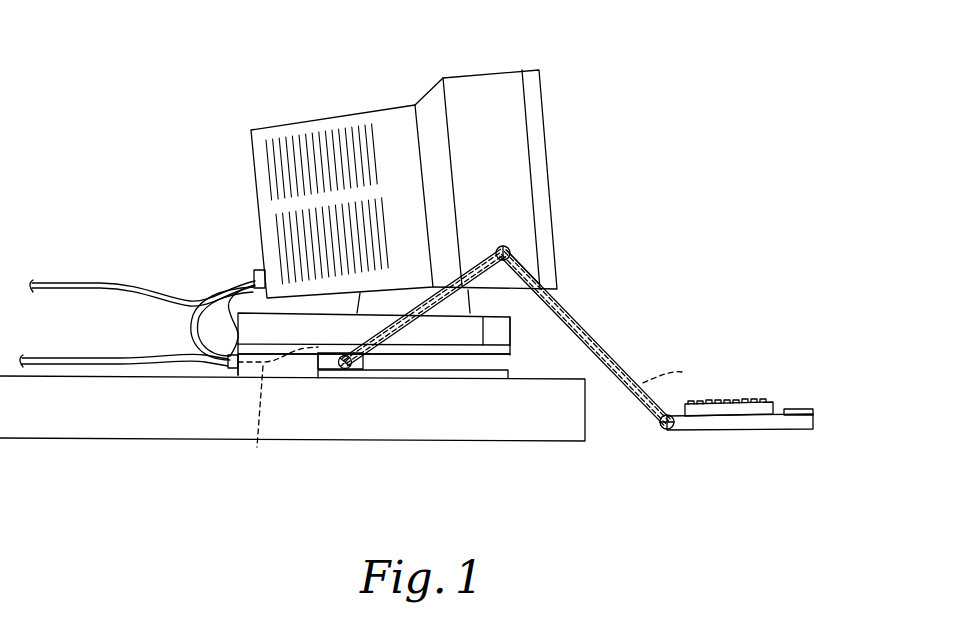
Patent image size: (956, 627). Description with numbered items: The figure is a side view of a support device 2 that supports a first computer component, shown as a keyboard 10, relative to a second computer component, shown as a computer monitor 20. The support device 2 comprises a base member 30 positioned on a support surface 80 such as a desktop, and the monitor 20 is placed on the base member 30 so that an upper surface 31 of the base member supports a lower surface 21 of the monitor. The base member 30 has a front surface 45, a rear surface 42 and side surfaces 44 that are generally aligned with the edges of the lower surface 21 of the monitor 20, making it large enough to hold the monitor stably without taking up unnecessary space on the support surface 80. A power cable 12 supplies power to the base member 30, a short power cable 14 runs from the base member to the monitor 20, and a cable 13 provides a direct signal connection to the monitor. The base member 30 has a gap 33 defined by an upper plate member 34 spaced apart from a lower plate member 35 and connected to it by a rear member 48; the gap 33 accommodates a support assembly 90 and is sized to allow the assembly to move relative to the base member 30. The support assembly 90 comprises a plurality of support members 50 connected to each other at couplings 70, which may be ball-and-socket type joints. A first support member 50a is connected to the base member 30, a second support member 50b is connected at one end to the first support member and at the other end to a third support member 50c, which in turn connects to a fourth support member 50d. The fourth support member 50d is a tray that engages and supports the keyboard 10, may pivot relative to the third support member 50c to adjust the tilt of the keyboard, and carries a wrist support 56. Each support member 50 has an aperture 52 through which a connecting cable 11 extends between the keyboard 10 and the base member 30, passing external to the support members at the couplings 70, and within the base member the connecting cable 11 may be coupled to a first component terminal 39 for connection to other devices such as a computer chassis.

The support device 2 is at (616, 153).
The keyboard 10 is at (773, 404).
The connecting cable 11 is at (481, 415).
The power cable 12 is at (60, 360).
The cable 13 is at (66, 283).
The short power cable 14 is at (203, 292).
The computer monitor 20 is at (464, 77).
The lower surface of the monitor 21 is at (229, 361).
The base member 30 is at (311, 380).
The upper surface of the base member 31 is at (512, 334).
The gap 33 is at (508, 365).
The upper plate member 34 is at (480, 312).
The lower plate member 35 is at (433, 378).
The first component terminal 39 is at (243, 368).
The rear surface of the base member 42 is at (230, 288).
The side surfaces of the base member 44 is at (312, 372).
The front surface of the base member 45 is at (512, 352).
The rear member 48 is at (290, 368).
The support members 50 is at (407, 277).
The first support member 50a is at (370, 358).
The second support member 50b is at (378, 330).
The third support member 50c is at (518, 262).
The fourth support member 50d is at (797, 430).
The aperture 52 is at (568, 300).
The wrist support 56 is at (800, 410).
The couplings 70 is at (503, 236).
The support surface 80 is at (572, 372).
The support assembly 90 is at (650, 364).